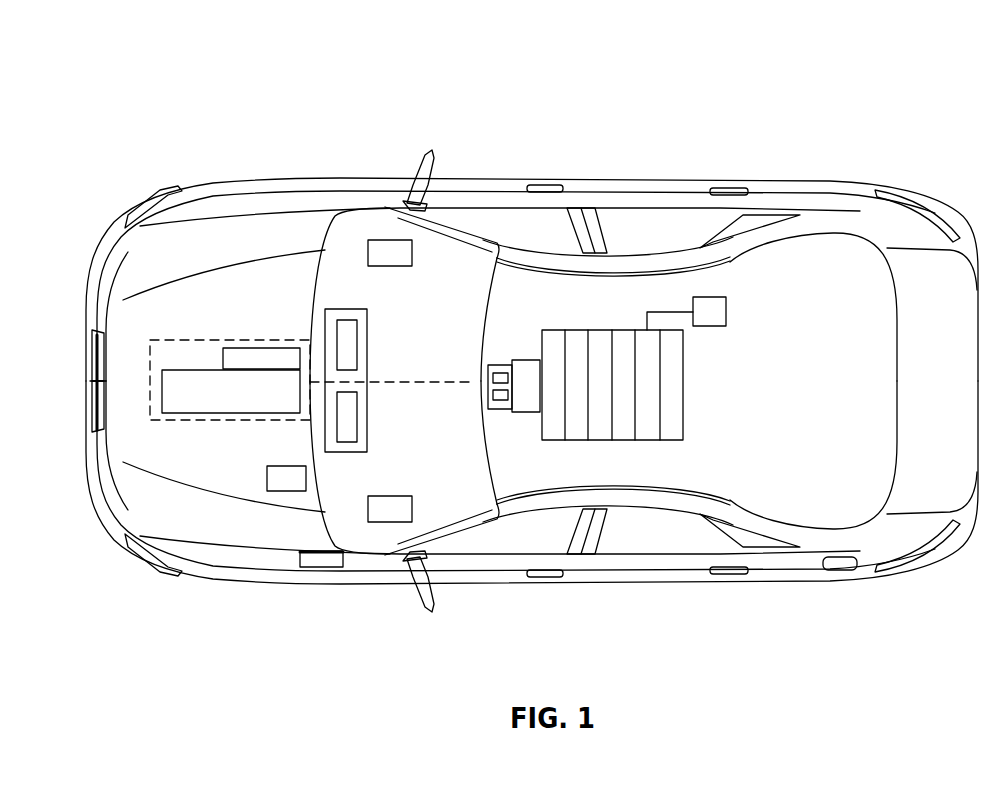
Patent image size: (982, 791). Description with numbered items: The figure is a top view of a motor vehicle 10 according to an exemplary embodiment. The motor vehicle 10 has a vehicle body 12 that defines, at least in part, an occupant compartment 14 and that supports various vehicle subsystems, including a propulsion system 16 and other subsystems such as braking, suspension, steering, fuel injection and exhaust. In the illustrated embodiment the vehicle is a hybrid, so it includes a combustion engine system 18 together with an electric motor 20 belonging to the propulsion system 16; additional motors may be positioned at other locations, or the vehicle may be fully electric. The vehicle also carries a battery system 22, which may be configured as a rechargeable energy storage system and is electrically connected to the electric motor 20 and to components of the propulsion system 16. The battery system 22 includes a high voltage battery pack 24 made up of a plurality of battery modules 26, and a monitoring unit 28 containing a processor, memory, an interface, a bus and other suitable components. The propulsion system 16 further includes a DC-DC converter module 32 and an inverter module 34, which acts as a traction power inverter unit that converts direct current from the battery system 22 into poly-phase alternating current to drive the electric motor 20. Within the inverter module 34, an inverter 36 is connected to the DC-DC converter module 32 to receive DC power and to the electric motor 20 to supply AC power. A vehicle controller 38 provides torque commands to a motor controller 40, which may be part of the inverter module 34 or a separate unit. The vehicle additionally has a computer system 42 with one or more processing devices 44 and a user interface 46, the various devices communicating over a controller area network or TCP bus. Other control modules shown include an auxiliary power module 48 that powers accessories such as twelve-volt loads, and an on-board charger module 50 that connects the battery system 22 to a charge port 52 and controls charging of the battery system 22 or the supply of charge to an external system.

The motor vehicle 10 is at (73, 96).
The vehicle body 12 is at (586, 173).
The occupant compartment 14 is at (630, 492).
The propulsion system 16 is at (190, 337).
The combustion engine system 18 is at (253, 413).
The electric motor 20 is at (280, 346).
The battery system 22 is at (717, 435).
The high voltage battery pack 24 is at (684, 368).
The battery modules 26 is at (573, 343).
The monitoring unit 28 is at (727, 313).
The DC-DC converter module 32 is at (530, 360).
The inverter module 34 is at (498, 363).
The inverter 36 is at (493, 376).
The vehicle controller 38 is at (282, 492).
The motor controller 40 is at (502, 405).
The computer system 42 is at (342, 292).
The processing devices 44 is at (358, 343).
The user interface 46 is at (358, 417).
The auxiliary power module 48 is at (383, 238).
The on-board charger module 50 is at (393, 523).
The charge port 52 is at (323, 567).